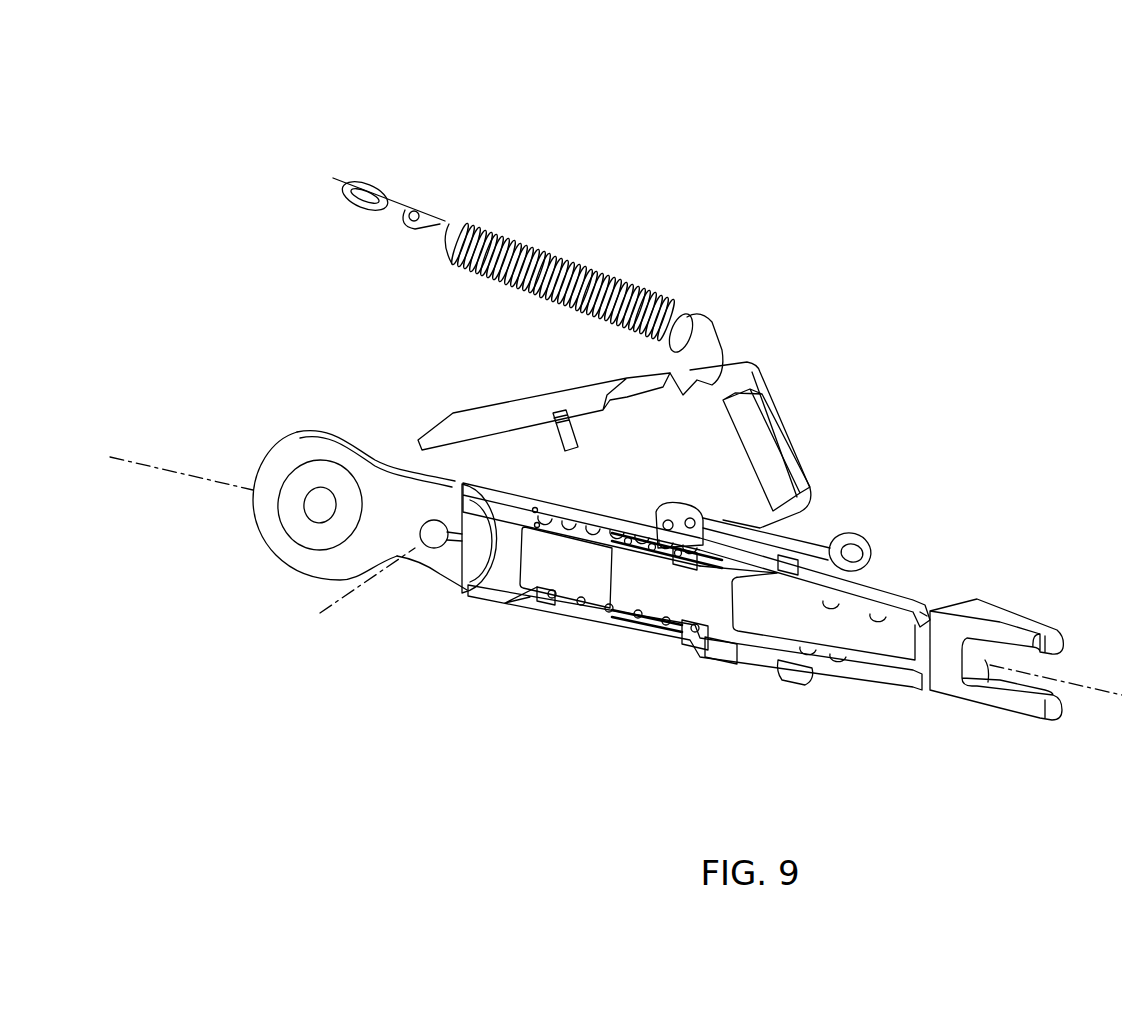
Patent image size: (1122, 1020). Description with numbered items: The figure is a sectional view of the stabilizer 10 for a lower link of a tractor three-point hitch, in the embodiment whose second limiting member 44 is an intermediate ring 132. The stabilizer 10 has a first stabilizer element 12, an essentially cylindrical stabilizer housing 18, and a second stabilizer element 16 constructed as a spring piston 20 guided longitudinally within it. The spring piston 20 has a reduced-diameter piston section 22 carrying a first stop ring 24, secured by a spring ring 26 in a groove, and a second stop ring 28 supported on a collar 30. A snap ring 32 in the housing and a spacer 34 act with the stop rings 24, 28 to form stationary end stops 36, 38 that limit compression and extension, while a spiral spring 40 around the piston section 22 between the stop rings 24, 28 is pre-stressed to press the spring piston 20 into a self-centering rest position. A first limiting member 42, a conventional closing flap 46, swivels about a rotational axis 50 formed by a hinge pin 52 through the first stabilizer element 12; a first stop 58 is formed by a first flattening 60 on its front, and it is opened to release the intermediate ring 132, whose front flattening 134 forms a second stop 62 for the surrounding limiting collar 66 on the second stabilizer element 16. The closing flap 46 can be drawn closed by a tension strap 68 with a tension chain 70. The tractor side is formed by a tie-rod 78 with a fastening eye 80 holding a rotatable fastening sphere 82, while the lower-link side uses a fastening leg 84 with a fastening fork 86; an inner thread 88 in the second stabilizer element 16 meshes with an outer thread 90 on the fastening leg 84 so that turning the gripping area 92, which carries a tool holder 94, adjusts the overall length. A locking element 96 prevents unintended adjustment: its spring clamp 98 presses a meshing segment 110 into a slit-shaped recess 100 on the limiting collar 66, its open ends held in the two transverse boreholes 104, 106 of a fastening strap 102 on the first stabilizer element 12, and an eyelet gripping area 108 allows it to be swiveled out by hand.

The stabilizer 10 is at (816, 118).
The first stabilizer element 12 is at (322, 664).
The second stabilizer element 16 is at (926, 717).
The stabilizer housing 18 is at (552, 607).
The spring piston 20 is at (467, 567).
The piston section 22 is at (590, 530).
The first stop ring 24 is at (536, 528).
The spring ring 26 is at (533, 587).
The second stop ring 28 is at (685, 635).
The collar 30 is at (690, 640).
The snap ring 32 is at (533, 595).
The spacer 34 is at (627, 540).
The end stop 36 is at (563, 581).
The end stop 38 is at (665, 570).
The spiral spring 40 is at (600, 607).
The first limiting member 42 is at (588, 434).
The second limiting member 44 is at (726, 687).
The outer closing flap 46 is at (473, 418).
The rotational axis 50 is at (313, 618).
The hinge pin 52 is at (430, 535).
The first stop 58 is at (802, 421).
The first flattening 60 is at (765, 412).
The second stop 62 is at (749, 543).
The limiting collar 66 is at (813, 667).
The tension strap 68 is at (707, 342).
The tension chain 70 is at (407, 203).
The tie-rod 78 is at (342, 523).
The fastening eye 80 is at (275, 460).
The fastening sphere 82 is at (310, 473).
The fastening leg 84 is at (1007, 611).
The fastening fork 86 is at (1047, 627).
The inner thread 88 is at (877, 684).
The outer thread 90 is at (885, 650).
The gripping area 92 is at (885, 592).
The tool holder 94 is at (928, 607).
The locking element 96 is at (875, 485).
The spring clamp 98 is at (875, 523).
The recess 100 is at (790, 563).
The fastening strap 102 is at (678, 512).
The transverse borehole 104 is at (665, 520).
The transverse borehole 106 is at (689, 518).
The gripping area 108 is at (865, 545).
The meshing segment 110 is at (787, 552).
The intermediate ring 132 is at (723, 647).
The flattening 134 is at (743, 650).